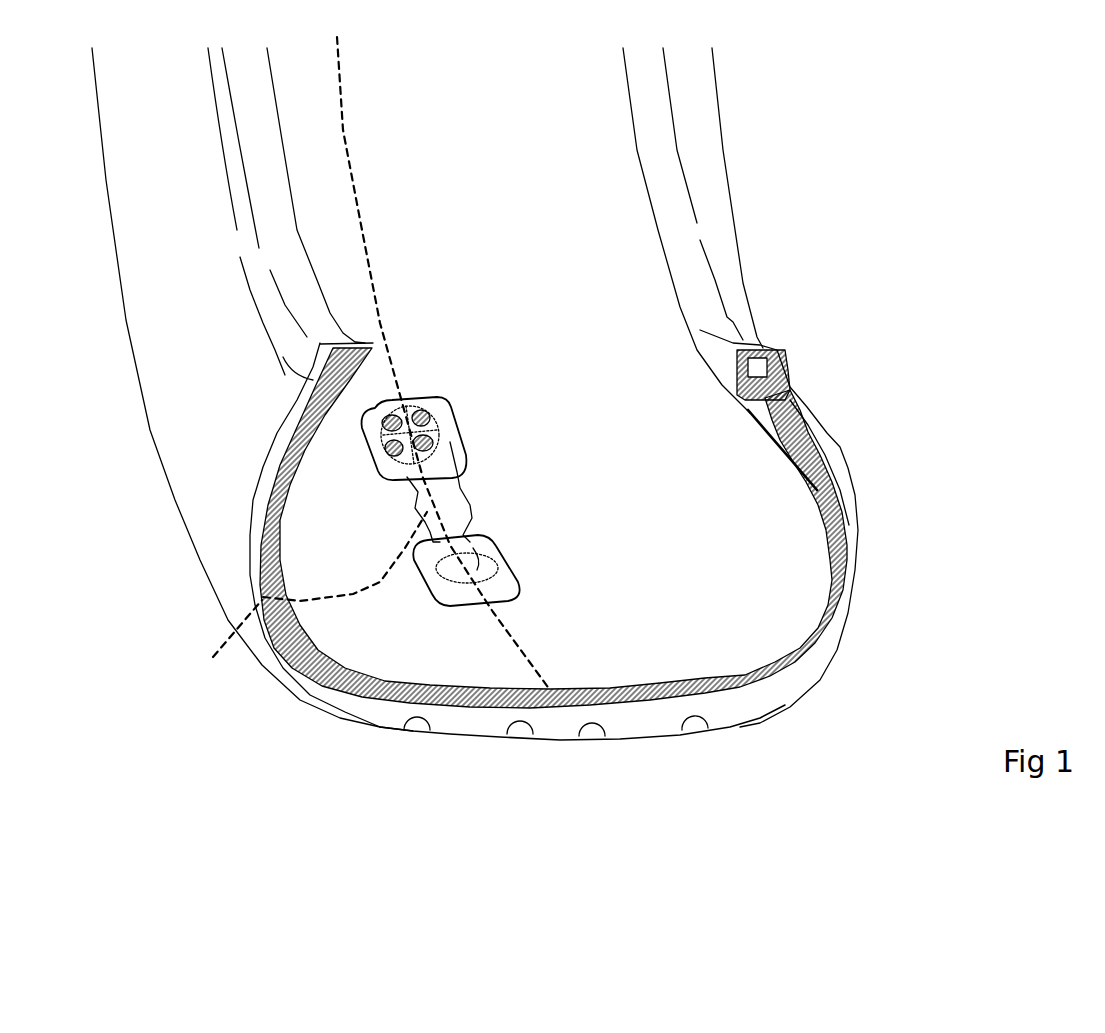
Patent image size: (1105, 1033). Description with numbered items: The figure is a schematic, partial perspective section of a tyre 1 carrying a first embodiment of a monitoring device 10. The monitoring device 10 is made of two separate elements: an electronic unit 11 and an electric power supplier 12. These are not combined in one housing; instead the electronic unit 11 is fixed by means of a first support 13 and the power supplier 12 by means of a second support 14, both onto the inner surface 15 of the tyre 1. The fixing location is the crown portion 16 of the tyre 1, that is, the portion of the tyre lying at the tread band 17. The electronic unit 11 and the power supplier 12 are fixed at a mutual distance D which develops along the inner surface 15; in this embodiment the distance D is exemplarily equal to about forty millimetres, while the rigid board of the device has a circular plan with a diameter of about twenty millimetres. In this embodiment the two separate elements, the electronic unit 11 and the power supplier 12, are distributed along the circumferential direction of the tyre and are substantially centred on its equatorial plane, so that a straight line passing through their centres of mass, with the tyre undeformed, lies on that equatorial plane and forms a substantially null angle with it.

The tyre 1 is at (620, 380).
The monitoring device 10 is at (504, 363).
The electronic unit 11 is at (264, 400).
The electric power supplier 12 is at (679, 538).
The first support 13 is at (249, 490).
The second support 14 is at (691, 607).
The inner surface 15 is at (498, 310).
The crown portion 16 is at (556, 792).
The tread band 17 is at (546, 775).
The mutual distance D is at (301, 601).